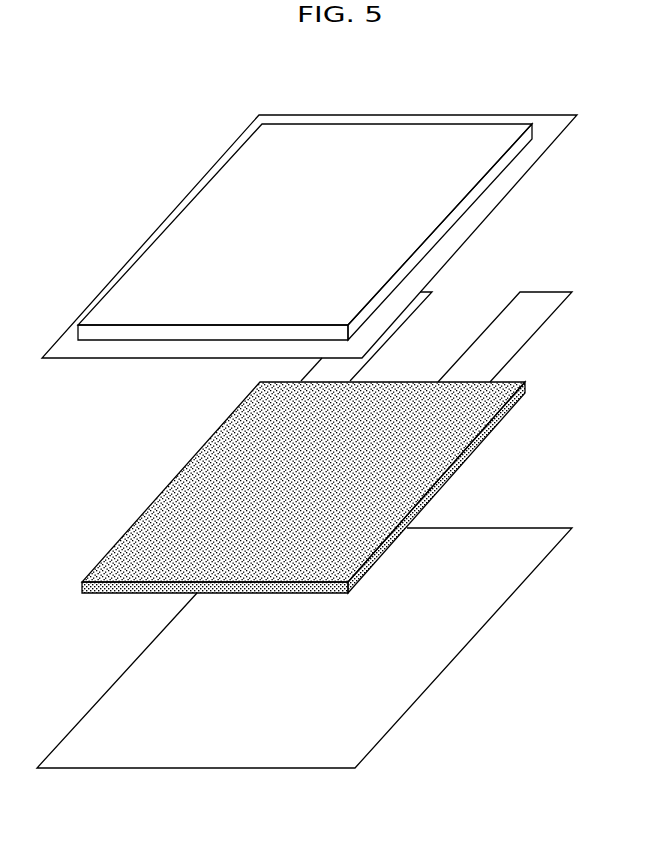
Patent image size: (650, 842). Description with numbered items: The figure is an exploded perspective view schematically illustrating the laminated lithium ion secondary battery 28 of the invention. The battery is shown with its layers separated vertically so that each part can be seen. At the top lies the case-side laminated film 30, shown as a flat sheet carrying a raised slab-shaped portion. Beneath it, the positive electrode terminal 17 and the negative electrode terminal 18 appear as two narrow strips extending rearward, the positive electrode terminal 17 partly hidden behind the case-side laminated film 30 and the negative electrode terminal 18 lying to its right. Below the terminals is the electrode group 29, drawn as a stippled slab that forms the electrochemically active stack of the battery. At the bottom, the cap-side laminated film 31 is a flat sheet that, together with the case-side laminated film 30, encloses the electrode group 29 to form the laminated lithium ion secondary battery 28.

The laminated lithium ion secondary battery 28 is at (151, 143).
The case-side laminated film 30 is at (493, 190).
The positive electrode terminal 17 is at (320, 366).
The negative electrode terminal 18 is at (540, 310).
The electrode group 29 is at (462, 438).
The cap-side laminated film 31 is at (437, 633).